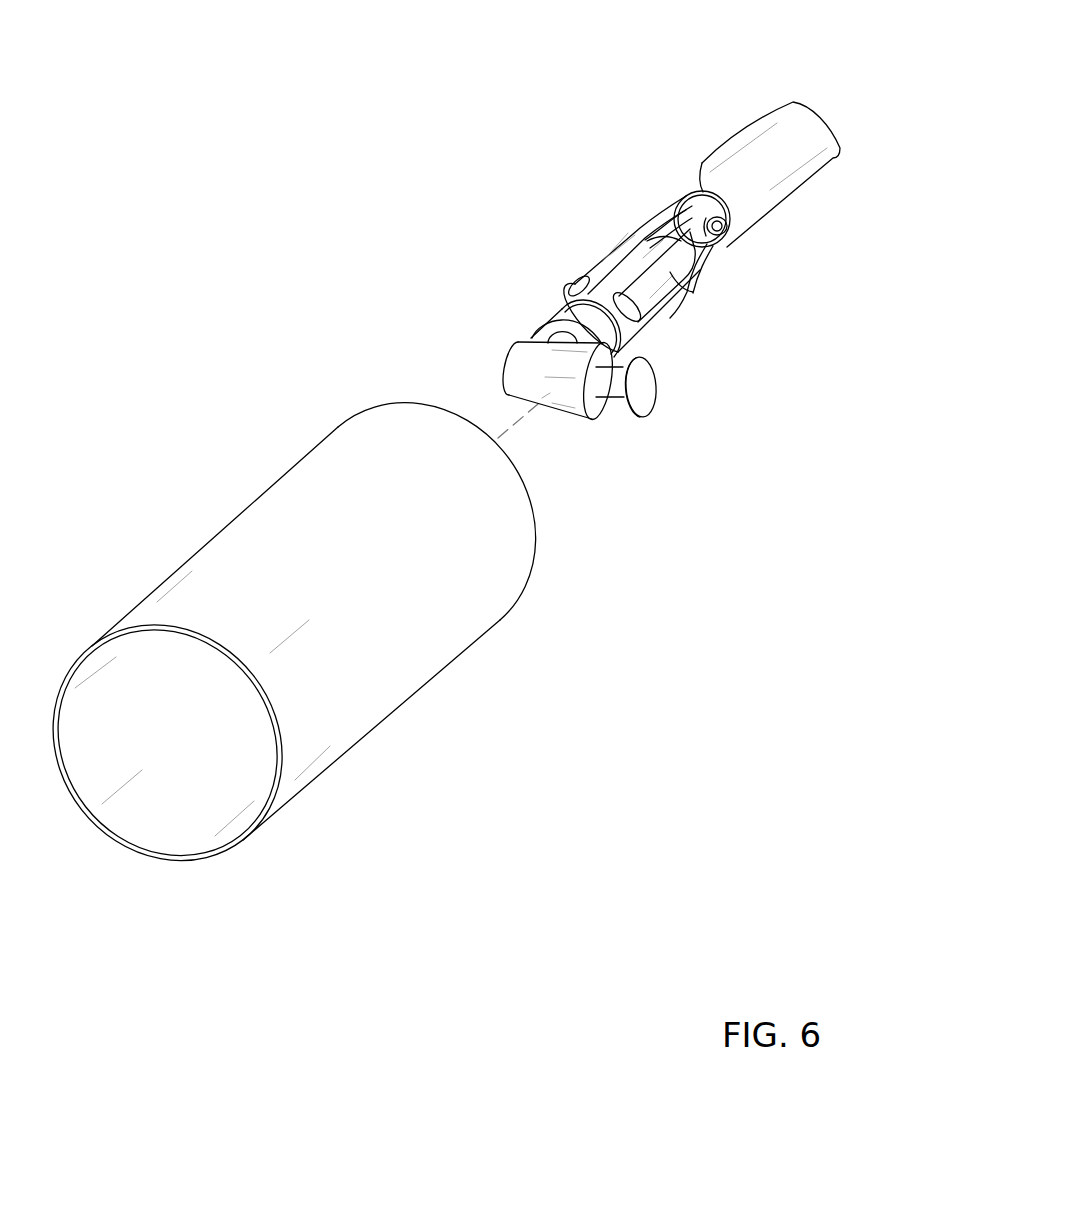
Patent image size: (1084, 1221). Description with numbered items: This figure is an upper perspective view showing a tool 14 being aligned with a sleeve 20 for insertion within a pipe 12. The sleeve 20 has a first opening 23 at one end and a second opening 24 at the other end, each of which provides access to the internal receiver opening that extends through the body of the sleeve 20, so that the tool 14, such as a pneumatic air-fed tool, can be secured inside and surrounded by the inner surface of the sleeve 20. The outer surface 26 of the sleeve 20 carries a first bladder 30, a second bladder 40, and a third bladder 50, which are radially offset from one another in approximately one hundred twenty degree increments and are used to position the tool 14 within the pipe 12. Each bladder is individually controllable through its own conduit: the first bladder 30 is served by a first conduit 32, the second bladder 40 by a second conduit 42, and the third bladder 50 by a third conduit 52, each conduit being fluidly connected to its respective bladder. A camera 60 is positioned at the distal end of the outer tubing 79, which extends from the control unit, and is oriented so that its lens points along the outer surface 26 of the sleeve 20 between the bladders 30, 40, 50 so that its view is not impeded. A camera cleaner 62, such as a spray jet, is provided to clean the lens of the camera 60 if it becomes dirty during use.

The pipe 12 is at (246, 492).
The tool 14 is at (642, 395).
The sleeve 20 is at (705, 267).
The first opening 23 is at (661, 220).
The second opening 24 is at (562, 309).
The outer surface 26 is at (578, 280).
The first bladder 30 is at (675, 273).
The first conduit 32 is at (678, 207).
The second bladder 40 is at (615, 243).
The second conduit 42 is at (639, 222).
The third bladder 50 is at (655, 298).
The third conduit 52 is at (688, 258).
The camera 60 is at (730, 222).
The camera cleaner 62 is at (723, 249).
The outer tubing 79 is at (783, 118).